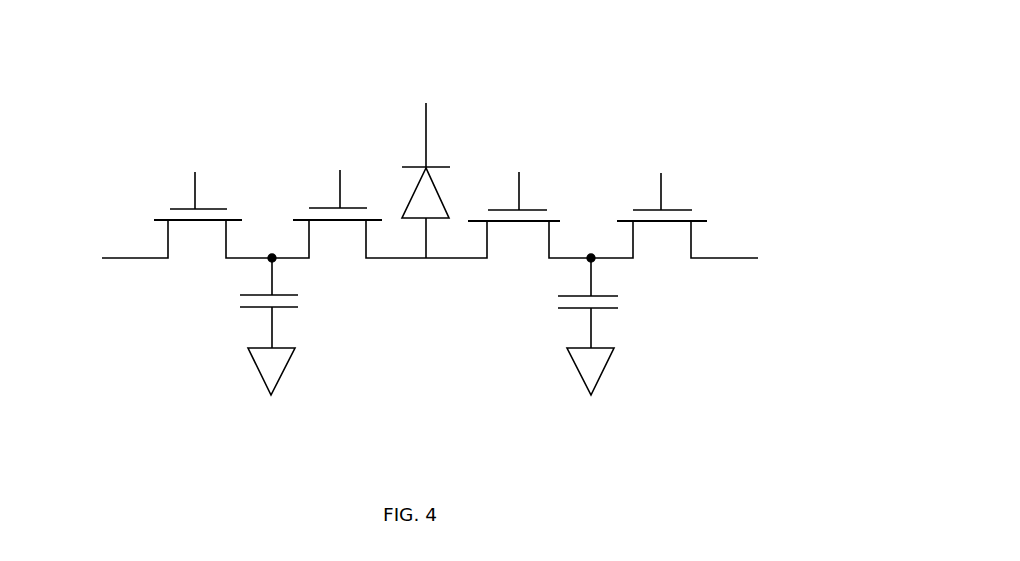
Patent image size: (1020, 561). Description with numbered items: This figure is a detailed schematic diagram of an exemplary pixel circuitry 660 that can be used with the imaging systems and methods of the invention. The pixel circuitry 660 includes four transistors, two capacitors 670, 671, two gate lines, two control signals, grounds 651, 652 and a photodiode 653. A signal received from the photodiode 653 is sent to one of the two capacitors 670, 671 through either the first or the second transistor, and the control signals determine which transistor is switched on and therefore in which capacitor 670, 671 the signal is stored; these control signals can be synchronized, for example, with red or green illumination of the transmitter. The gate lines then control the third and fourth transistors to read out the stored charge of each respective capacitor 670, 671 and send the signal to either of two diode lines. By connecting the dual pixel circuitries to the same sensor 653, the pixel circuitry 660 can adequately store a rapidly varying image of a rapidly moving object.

The pixel circuitry 660 is at (431, 232).
The photodiode 653 is at (427, 198).
The capacitor 670 is at (292, 302).
The capacitor 671 is at (596, 303).
The ground 651 is at (265, 365).
The ground 652 is at (595, 366).